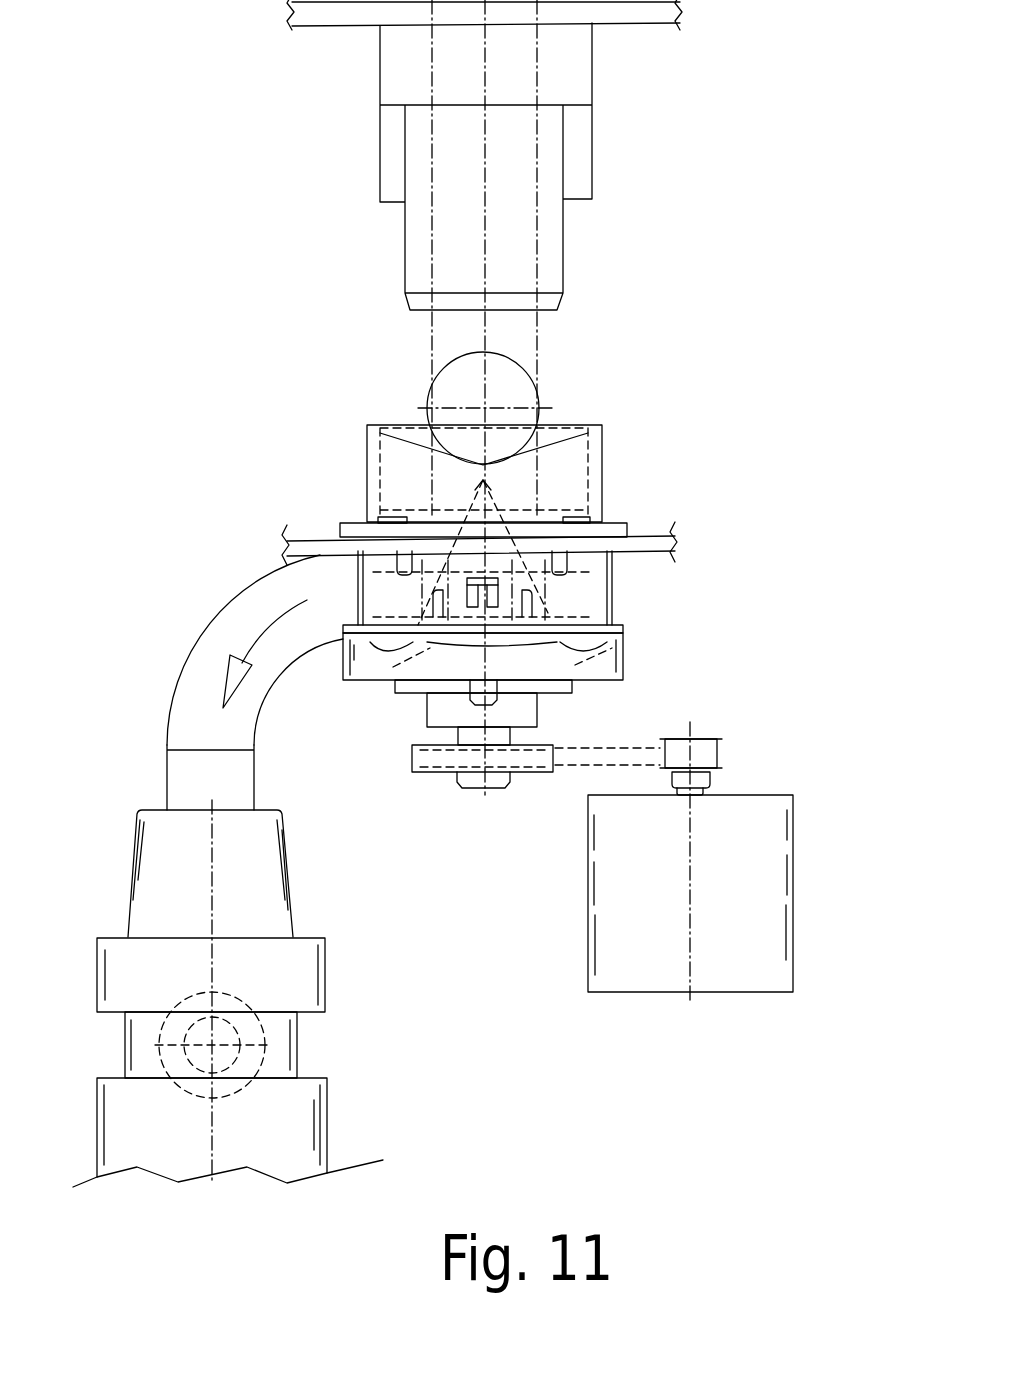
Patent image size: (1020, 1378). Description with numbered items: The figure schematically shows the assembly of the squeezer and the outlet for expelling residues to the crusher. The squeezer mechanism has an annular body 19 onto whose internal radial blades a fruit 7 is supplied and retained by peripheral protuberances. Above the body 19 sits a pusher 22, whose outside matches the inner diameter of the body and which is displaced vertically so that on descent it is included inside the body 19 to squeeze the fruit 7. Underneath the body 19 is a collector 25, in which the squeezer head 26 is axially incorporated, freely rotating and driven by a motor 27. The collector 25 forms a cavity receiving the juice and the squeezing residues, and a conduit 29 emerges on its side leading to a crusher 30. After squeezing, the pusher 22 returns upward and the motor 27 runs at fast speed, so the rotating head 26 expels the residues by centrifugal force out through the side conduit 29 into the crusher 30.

The pusher 22 is at (568, 226).
The fruit 7 is at (543, 395).
The annular body 19 is at (608, 465).
The squeezer head 26 is at (472, 562).
The collector 25 is at (613, 595).
The conduit 29 is at (213, 625).
The motor 27 is at (793, 885).
The crusher 30 is at (328, 1123).